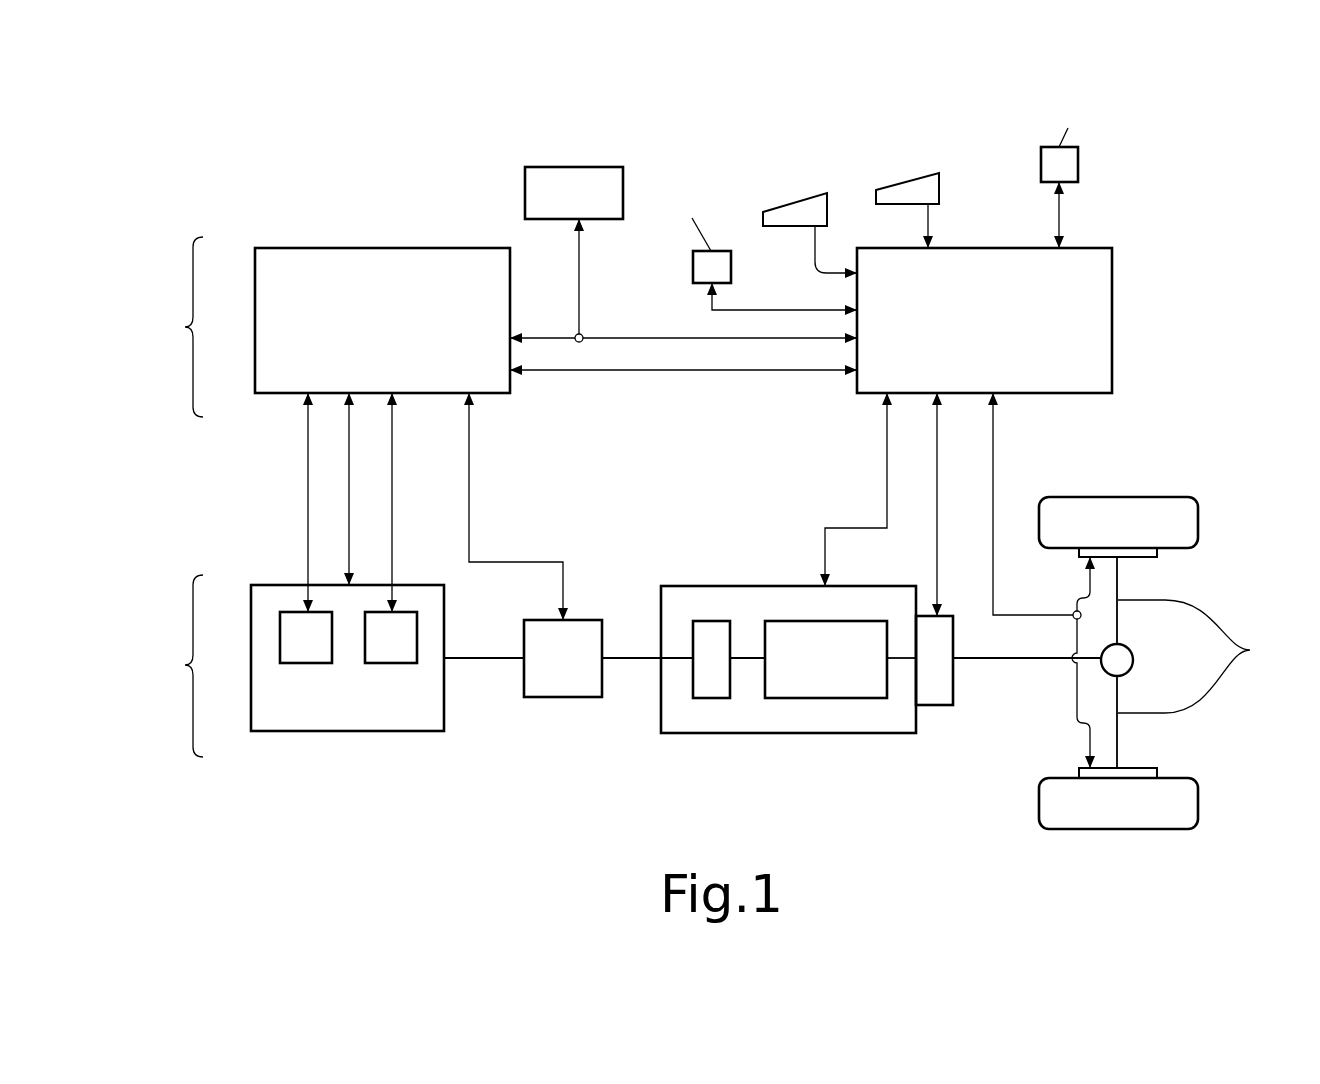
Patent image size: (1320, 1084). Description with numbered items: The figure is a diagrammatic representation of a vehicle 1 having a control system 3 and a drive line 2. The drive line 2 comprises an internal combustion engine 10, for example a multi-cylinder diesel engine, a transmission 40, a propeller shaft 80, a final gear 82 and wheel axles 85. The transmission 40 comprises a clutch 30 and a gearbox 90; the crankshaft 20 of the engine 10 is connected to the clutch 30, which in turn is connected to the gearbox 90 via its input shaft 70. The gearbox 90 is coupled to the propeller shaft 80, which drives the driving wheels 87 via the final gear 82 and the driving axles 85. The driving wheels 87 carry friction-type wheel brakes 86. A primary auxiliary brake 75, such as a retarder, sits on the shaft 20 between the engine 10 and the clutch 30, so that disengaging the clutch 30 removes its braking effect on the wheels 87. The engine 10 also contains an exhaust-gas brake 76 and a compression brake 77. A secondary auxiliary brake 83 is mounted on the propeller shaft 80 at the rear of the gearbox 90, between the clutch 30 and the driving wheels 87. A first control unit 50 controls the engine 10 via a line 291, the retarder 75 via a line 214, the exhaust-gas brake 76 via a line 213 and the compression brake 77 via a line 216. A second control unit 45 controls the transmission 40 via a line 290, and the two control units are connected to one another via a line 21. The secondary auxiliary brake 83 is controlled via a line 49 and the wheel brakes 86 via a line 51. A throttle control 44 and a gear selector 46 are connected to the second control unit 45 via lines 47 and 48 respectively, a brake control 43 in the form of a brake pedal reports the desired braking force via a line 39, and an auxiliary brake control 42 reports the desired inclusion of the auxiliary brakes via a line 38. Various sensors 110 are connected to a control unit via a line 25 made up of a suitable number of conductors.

The vehicle 1 is at (170, 186).
The drive line 2 is at (181, 666).
The control system 3 is at (181, 327).
The internal combustion engine 10 is at (342, 731).
The crankshaft 20 is at (495, 658).
The line 21 is at (722, 370).
The line 25 is at (680, 338).
The clutch 30 is at (710, 700).
The line 38 is at (737, 310).
The line 39 is at (817, 240).
The transmission 40 is at (712, 733).
The auxiliary brake control 42 is at (693, 267).
The brake control 43 is at (827, 207).
The throttle control 44 is at (939, 190).
The second control unit 45 is at (1112, 318).
The gear selector 46 is at (1078, 168).
The line 47 is at (928, 217).
The line 48 is at (1060, 213).
The line 49 is at (937, 506).
The first control unit 50 is at (378, 248).
The line 51 is at (993, 523).
The input shaft 70 is at (748, 660).
The primary auxiliary brake 75 is at (563, 697).
The exhaust-gas brake 76 is at (307, 663).
The compression brake 77 is at (390, 663).
The propeller shaft 80 is at (990, 660).
The final gear 82 is at (1133, 660).
The secondary auxiliary brake 83 is at (937, 705).
The wheel axles 85 is at (1205, 662).
The wheel brakes 86 is at (1157, 552).
The driving wheels 87 is at (1198, 520).
The gearbox 90 is at (853, 700).
The sensors 110 is at (578, 167).
The line 213 is at (308, 458).
The line 214 is at (469, 552).
The line 216 is at (392, 526).
The line 290 is at (887, 473).
The line 291 is at (349, 490).